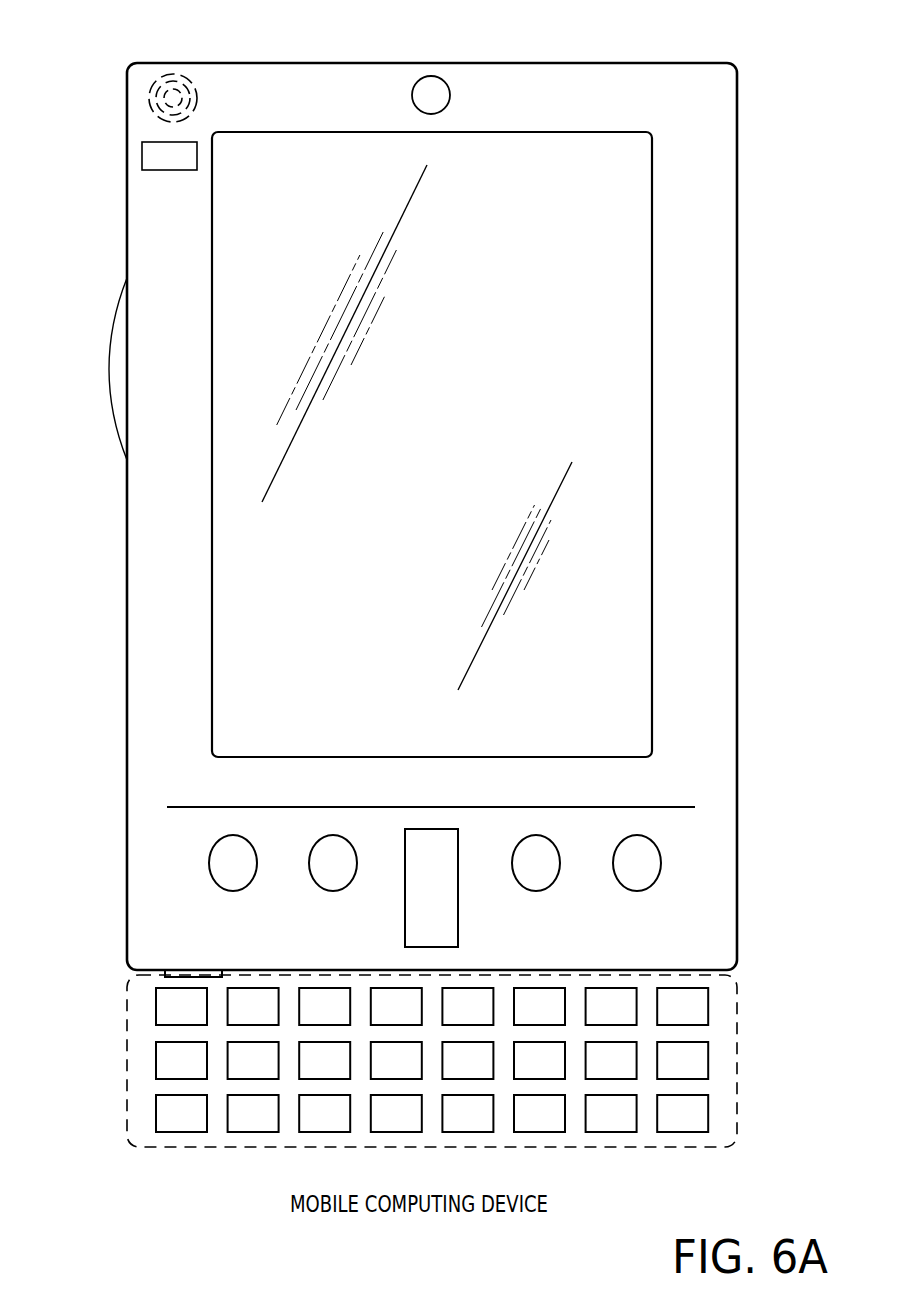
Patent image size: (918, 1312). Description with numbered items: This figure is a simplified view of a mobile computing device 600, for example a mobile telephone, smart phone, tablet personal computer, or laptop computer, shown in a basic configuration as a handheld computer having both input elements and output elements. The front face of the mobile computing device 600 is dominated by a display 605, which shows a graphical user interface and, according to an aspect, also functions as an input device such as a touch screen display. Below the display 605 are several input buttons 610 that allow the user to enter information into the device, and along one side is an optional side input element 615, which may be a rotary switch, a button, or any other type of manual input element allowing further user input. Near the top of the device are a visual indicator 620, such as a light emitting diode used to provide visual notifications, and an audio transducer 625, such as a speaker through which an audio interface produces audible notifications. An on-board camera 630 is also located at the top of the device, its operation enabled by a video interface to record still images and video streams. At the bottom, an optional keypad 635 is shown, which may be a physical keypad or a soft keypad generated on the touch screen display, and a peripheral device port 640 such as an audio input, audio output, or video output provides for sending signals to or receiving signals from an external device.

The mobile computing device 600 is at (704, 64).
The display 605 is at (258, 604).
The input buttons 610 is at (233, 891).
The side input element 615 is at (109, 369).
The visual indicator 620 is at (142, 157).
The audio transducer 625 is at (150, 98).
The on-board camera 630 is at (432, 76).
The keypad 635 is at (135, 1058).
The peripheral device port 640 is at (165, 974).